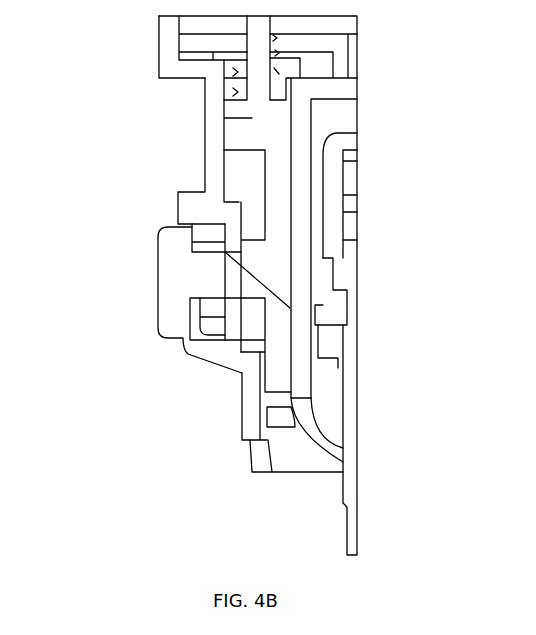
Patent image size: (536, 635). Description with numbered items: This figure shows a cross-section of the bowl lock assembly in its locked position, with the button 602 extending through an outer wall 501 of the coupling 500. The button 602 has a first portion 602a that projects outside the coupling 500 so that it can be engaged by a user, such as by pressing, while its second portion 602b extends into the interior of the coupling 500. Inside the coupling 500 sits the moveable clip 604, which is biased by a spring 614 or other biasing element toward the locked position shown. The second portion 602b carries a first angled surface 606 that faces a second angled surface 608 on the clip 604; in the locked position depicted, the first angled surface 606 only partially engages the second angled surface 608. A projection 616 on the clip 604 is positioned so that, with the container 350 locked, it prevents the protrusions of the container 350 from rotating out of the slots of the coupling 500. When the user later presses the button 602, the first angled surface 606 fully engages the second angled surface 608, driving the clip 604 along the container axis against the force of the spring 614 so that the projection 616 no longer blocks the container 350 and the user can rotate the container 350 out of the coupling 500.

The coupling 500 is at (345, 57).
The spring 614 is at (183, 43).
The moveable clip 604 is at (227, 118).
The outer wall 501 is at (212, 167).
The button 602 is at (173, 287).
The first portion 602a is at (173, 247).
The second portion 602b is at (218, 281).
The projection 616 is at (277, 367).
The first angled surface 606 is at (262, 257).
The second angled surface 608 is at (268, 282).
The container 350 is at (333, 338).